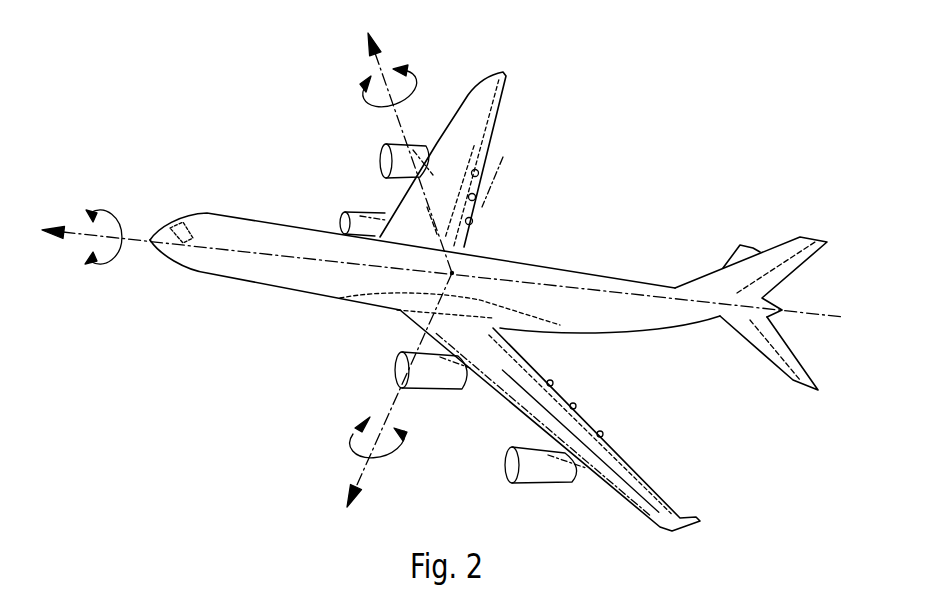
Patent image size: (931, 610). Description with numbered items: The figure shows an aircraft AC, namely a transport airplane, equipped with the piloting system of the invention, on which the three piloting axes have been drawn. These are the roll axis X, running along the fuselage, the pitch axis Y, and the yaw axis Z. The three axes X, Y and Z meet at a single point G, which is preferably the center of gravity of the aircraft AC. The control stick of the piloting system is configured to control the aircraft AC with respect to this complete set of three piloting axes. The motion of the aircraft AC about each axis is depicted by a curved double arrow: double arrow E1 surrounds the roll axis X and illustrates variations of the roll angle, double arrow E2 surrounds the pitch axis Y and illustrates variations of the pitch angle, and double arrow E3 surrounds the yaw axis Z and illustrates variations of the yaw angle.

The aircraft AC is at (273, 290).
The point of intersection of the axes G is at (456, 271).
The roll axis X is at (442, 272).
The pitch axis Y is at (410, 145).
The yaw axis Z is at (399, 397).
The double arrow E1 is at (118, 212).
The double arrow E2 is at (375, 107).
The double arrow E3 is at (383, 456).